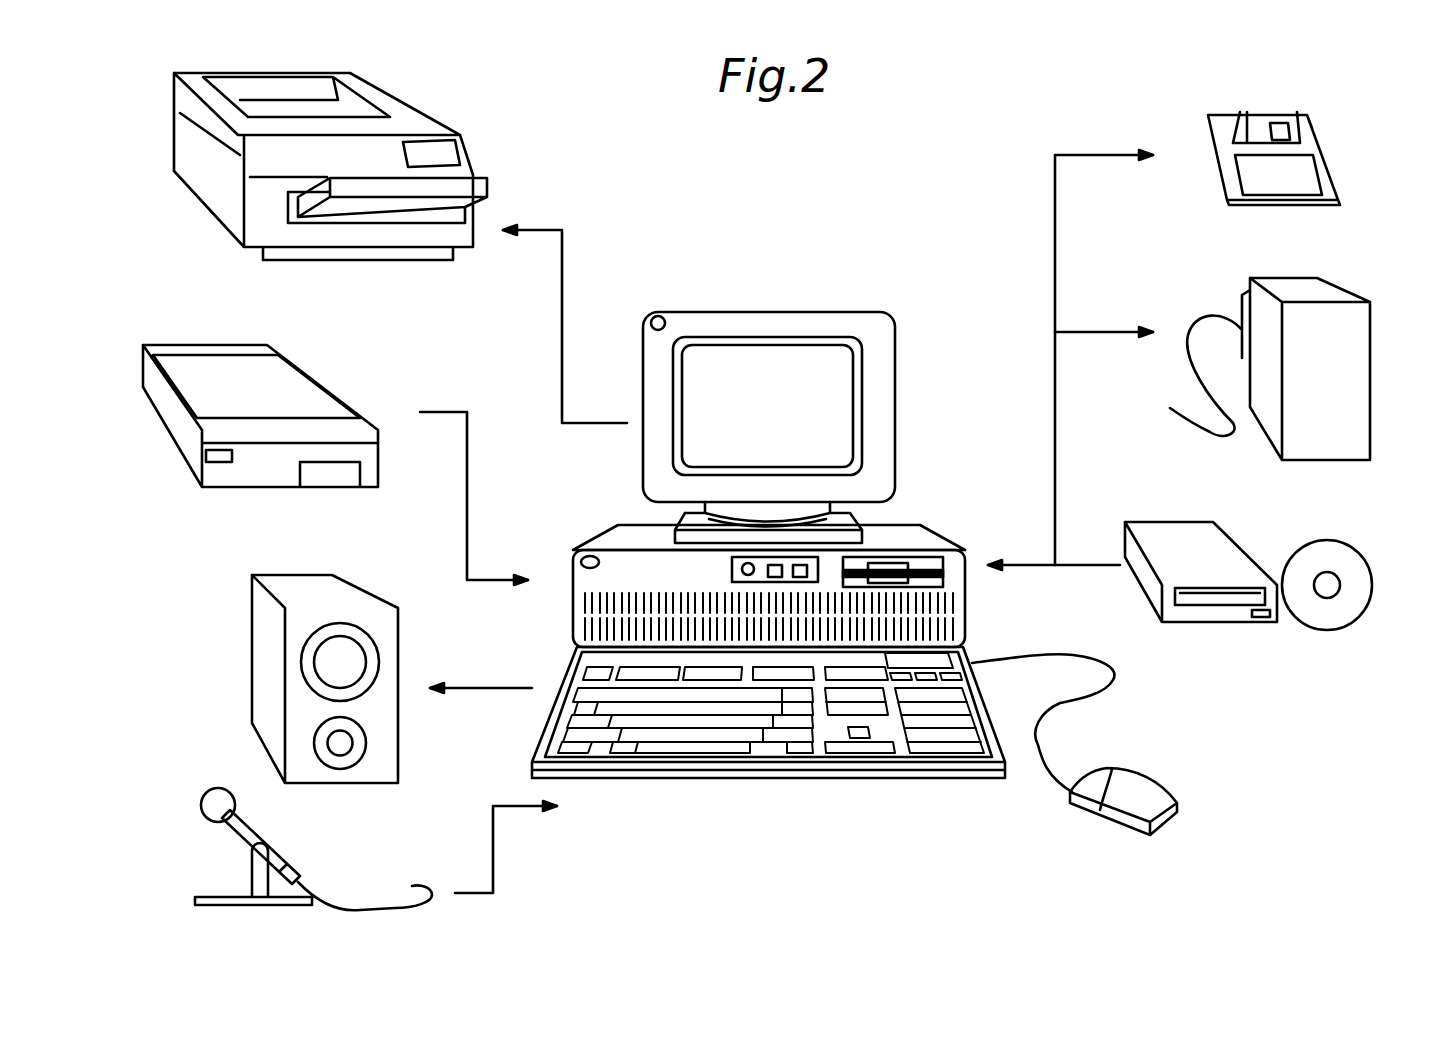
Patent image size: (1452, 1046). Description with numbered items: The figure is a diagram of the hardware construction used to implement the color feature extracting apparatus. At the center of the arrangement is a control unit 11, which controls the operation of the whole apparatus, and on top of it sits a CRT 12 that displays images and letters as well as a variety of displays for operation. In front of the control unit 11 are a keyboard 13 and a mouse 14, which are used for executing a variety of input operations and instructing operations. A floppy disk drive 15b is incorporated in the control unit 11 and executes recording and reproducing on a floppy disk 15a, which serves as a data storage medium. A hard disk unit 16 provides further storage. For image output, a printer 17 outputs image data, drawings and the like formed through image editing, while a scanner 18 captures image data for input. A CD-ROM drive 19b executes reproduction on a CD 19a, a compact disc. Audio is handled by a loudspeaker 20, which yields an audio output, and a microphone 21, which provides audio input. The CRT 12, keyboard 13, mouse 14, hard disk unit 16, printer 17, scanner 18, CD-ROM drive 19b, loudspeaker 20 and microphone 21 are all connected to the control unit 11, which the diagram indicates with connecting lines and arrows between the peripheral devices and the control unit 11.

The control unit 11 is at (557, 560).
The CRT 12 is at (640, 393).
The keyboard 13 is at (563, 675).
The mouse 14 is at (1113, 803).
The floppy disk 15a is at (1307, 175).
The floppy disk drive 15b is at (923, 563).
The hard disk unit 16 is at (1323, 287).
The printer 17 is at (420, 122).
The scanner 18 is at (300, 392).
The CD 19a is at (1352, 560).
The CD-ROM drive 19b is at (1183, 540).
The loudspeaker 20 is at (327, 588).
The microphone 21 is at (280, 858).